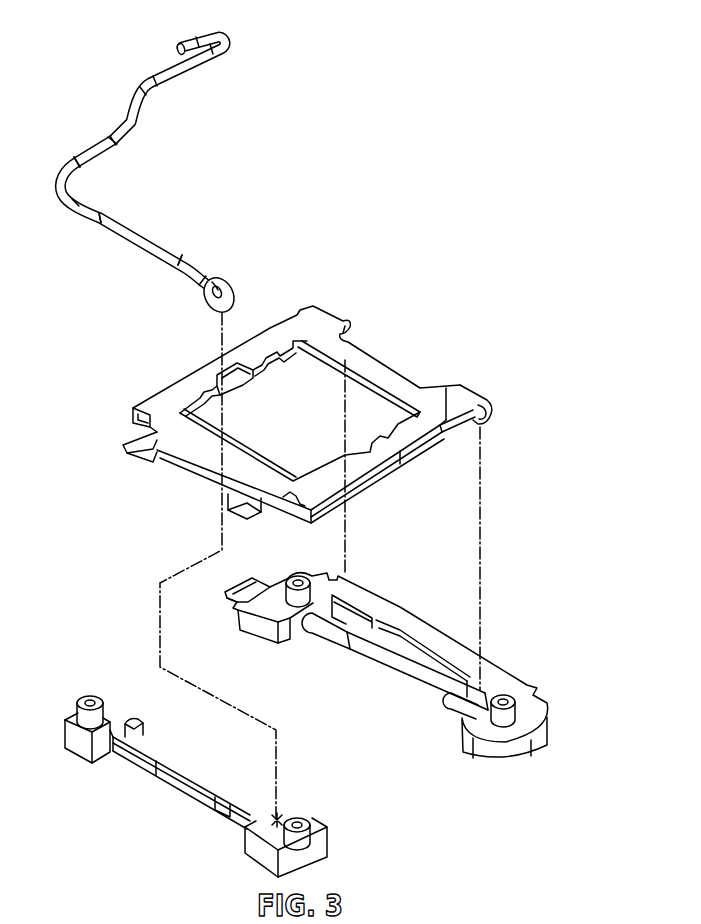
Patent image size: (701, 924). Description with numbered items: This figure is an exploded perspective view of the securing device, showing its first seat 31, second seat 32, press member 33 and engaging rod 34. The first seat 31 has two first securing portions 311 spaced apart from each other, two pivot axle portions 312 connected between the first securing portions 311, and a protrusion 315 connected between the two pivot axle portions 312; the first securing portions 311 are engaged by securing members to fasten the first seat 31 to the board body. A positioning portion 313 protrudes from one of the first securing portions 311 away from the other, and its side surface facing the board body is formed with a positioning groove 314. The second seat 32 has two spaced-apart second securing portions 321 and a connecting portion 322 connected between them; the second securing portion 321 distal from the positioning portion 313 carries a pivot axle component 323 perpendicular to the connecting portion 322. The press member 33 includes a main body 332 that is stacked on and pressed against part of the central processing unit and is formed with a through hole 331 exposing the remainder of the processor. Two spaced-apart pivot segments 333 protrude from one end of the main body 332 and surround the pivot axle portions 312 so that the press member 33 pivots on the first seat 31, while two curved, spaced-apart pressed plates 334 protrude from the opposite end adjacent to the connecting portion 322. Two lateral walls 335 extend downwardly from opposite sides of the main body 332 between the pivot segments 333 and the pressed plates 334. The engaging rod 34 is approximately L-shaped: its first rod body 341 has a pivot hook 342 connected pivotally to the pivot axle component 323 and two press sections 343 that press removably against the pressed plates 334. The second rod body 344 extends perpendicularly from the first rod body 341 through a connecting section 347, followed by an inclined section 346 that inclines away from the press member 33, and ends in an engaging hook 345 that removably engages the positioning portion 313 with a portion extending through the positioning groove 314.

The first seat 31 is at (362, 645).
The first securing portions 311 is at (278, 585).
The pivot axle portions 312 is at (333, 636).
The positioning portion 313 is at (228, 594).
The positioning groove 314 is at (234, 610).
The protrusion 315 is at (397, 657).
The second seat 32 is at (206, 775).
The second securing portions 321 is at (72, 725).
The connecting portion 322 is at (187, 777).
The pivot axle component 323 is at (280, 817).
The press member 33 is at (300, 421).
The through hole 331 is at (373, 398).
The main body 332 is at (447, 388).
The pivot segments 333 is at (344, 306).
The pressed plates 334 is at (140, 448).
The lateral walls 335 is at (147, 417).
The engaging rod 34 is at (125, 94).
The first rod body 341 is at (140, 252).
The pivot hook 342 is at (233, 302).
The press sections 343 is at (88, 222).
The second rod body 344 is at (120, 117).
The engaging hook 345 is at (186, 43).
The inclined section 346 is at (140, 107).
The connecting section 347 is at (85, 158).